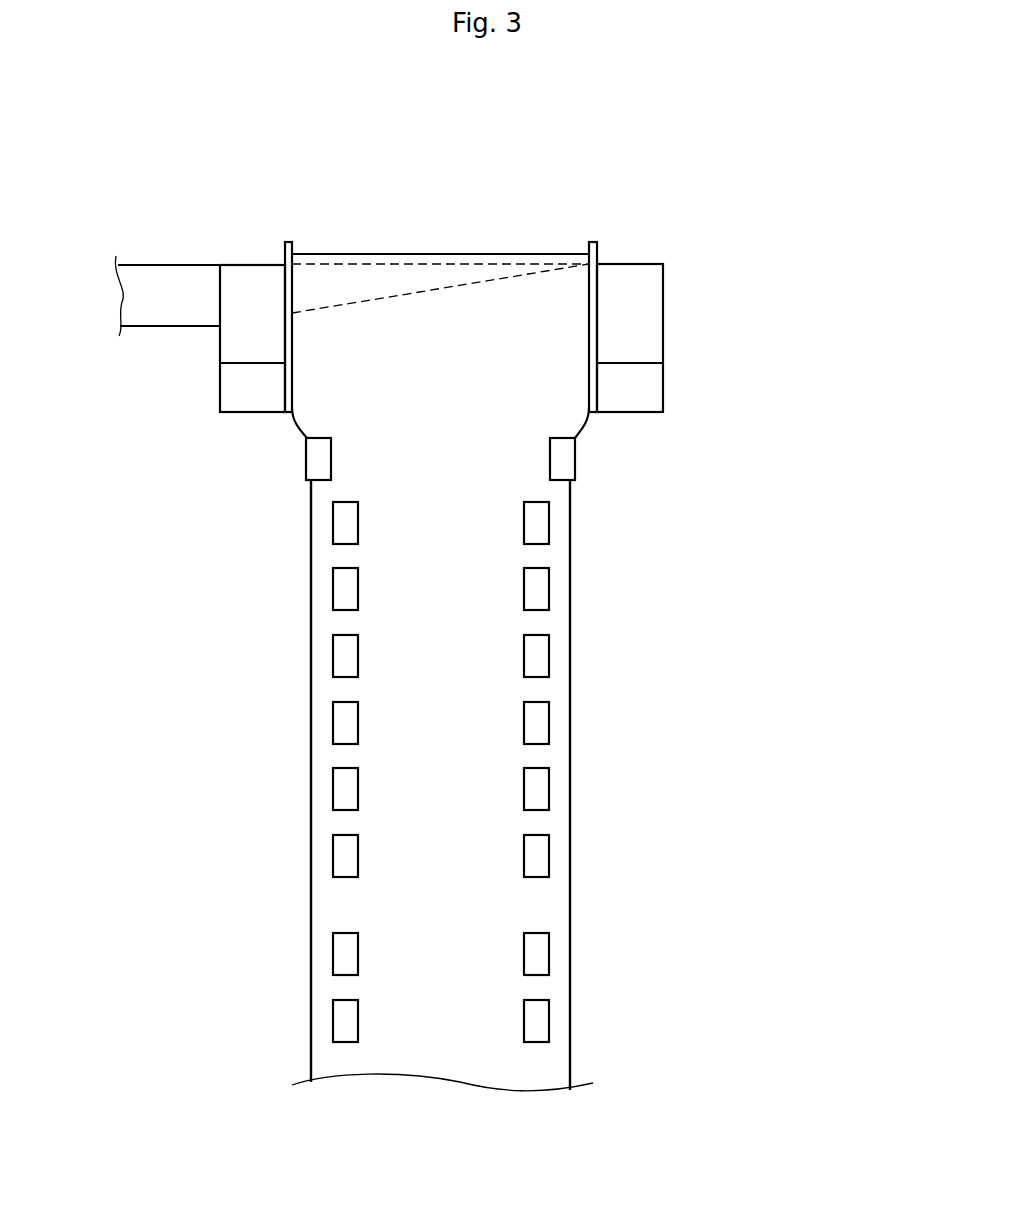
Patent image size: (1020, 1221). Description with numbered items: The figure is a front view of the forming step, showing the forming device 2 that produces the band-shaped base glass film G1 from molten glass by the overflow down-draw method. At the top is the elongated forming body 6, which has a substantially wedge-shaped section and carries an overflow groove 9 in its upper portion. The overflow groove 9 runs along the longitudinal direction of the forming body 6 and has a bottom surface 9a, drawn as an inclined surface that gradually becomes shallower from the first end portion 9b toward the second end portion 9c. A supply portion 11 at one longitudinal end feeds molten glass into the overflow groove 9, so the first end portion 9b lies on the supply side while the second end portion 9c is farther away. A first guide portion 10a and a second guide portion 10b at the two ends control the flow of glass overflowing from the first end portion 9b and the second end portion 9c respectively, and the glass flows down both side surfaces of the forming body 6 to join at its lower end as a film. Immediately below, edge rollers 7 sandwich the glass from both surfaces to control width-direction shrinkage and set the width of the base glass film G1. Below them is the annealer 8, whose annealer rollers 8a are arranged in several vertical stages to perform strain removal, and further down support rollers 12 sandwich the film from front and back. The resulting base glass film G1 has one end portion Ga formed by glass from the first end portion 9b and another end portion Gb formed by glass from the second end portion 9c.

The forming device 2 is at (703, 176).
The forming body 6 is at (640, 316).
The edge rollers 7 is at (320, 460).
The annealer 8 is at (611, 664).
The annealer rollers 8a is at (345, 590).
The overflow groove 9 is at (355, 151).
The bottom surface 9a is at (426, 267).
The first end portion 9b is at (293, 289).
The second end portion 9c is at (587, 265).
The first guide portion 10a is at (284, 254).
The second guide portion 10b is at (598, 254).
The supply portion 11 is at (165, 284).
The support rollers 12 is at (345, 1020).
The base glass film G1 is at (477, 778).
The one end portion Ga is at (322, 822).
The another end portion Gb is at (560, 822).